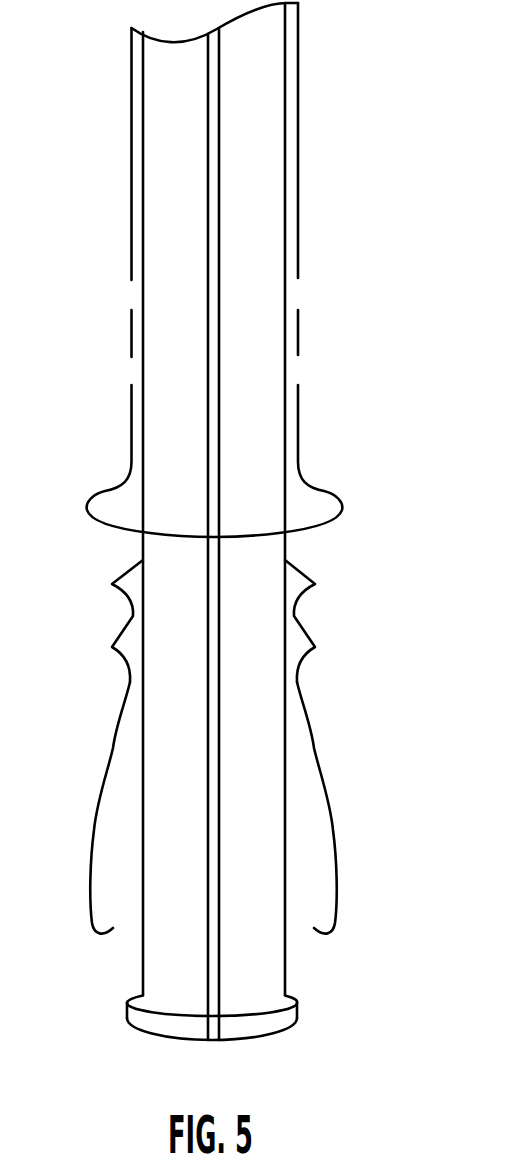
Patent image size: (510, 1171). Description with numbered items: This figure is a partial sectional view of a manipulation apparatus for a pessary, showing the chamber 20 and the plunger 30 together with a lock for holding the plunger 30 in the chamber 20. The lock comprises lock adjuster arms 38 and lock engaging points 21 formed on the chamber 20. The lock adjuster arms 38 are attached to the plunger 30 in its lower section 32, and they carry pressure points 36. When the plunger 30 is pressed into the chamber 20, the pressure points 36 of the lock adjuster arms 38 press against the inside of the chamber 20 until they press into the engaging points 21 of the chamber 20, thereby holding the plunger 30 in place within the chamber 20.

The chamber 20 is at (300, 82).
The lock engaging points 21 is at (300, 297).
The lower section 32 is at (273, 190).
The plunger 30 is at (158, 557).
The pressure points 36 is at (318, 590).
The lock adjuster arms 38 is at (322, 784).